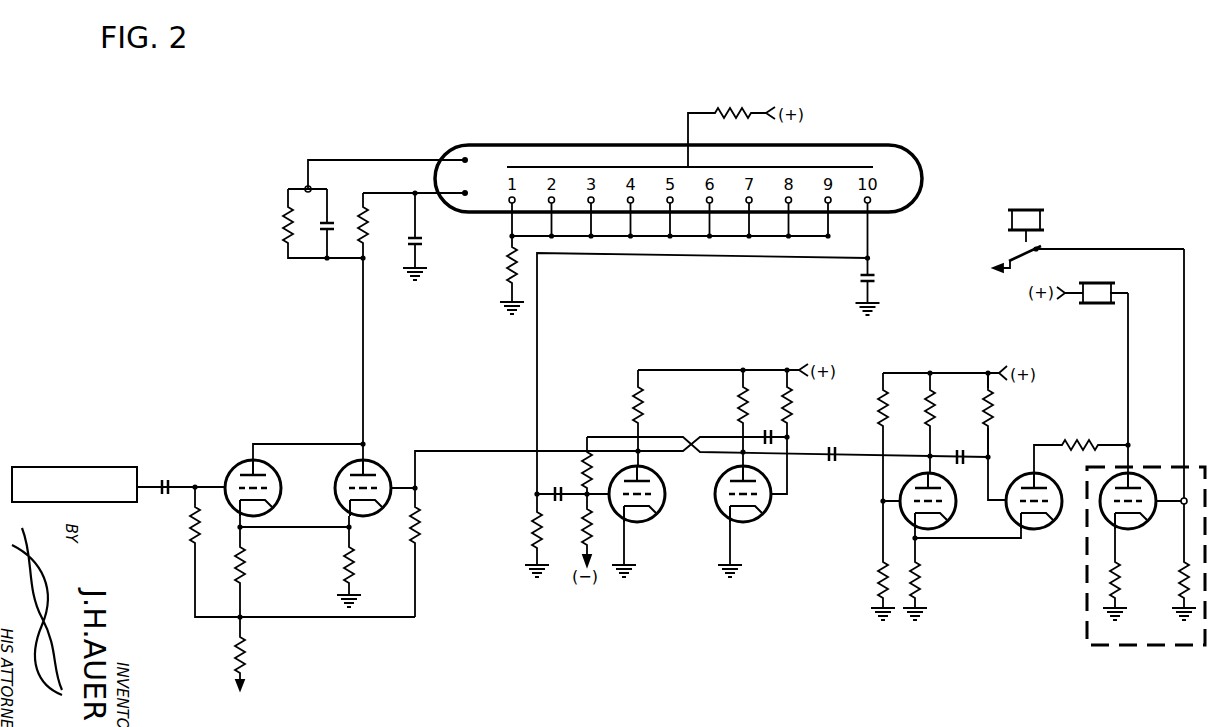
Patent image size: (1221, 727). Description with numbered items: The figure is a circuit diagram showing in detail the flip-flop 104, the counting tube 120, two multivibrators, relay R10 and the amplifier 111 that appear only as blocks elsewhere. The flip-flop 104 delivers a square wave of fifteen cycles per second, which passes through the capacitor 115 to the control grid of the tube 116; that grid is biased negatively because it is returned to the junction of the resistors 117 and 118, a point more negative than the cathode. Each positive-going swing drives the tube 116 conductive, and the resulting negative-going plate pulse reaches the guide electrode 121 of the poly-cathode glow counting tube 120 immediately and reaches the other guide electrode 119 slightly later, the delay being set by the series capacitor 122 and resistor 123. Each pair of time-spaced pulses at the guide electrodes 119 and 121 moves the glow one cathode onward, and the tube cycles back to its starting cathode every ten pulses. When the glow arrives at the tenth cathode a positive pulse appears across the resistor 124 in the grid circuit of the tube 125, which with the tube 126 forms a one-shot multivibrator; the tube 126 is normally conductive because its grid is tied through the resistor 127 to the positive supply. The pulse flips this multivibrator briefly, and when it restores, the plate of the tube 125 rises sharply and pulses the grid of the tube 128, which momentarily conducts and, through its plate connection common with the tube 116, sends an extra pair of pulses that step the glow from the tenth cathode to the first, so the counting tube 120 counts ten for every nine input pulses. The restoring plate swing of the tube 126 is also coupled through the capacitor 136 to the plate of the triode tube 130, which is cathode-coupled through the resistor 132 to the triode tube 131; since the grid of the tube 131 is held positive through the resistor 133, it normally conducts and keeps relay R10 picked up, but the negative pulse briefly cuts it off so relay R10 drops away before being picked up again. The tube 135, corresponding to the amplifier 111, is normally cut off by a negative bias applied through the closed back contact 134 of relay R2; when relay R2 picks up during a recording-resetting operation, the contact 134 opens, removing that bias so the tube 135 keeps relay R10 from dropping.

The flip-flop 104 is at (78, 466).
The capacitor 115 is at (165, 478).
The tube 116 is at (230, 466).
The resistor 117 is at (244, 562).
The resistor 118 is at (245, 655).
The guide electrode 119 is at (465, 200).
The poly-cathode glow counting tube 120 is at (523, 143).
The guide electrode 121 is at (463, 155).
The capacitor 122 is at (423, 242).
The resistor 123 is at (364, 217).
The resistor 124 is at (527, 516).
The tube 125 is at (662, 516).
The tube 126 is at (765, 515).
The resistor 127 is at (791, 390).
The tube 128 is at (378, 467).
The triode tube 130 is at (950, 512).
The triode tube 131 is at (1040, 532).
The resistor 132 is at (922, 577).
The resistor 133 is at (992, 393).
The back contact 134 is at (1027, 256).
The tube 135 is at (1127, 533).
The capacitor 136 is at (832, 464).
The amplifier 111 is at (1160, 646).
The relay R2 is at (1028, 209).
The relay R10 is at (1097, 276).